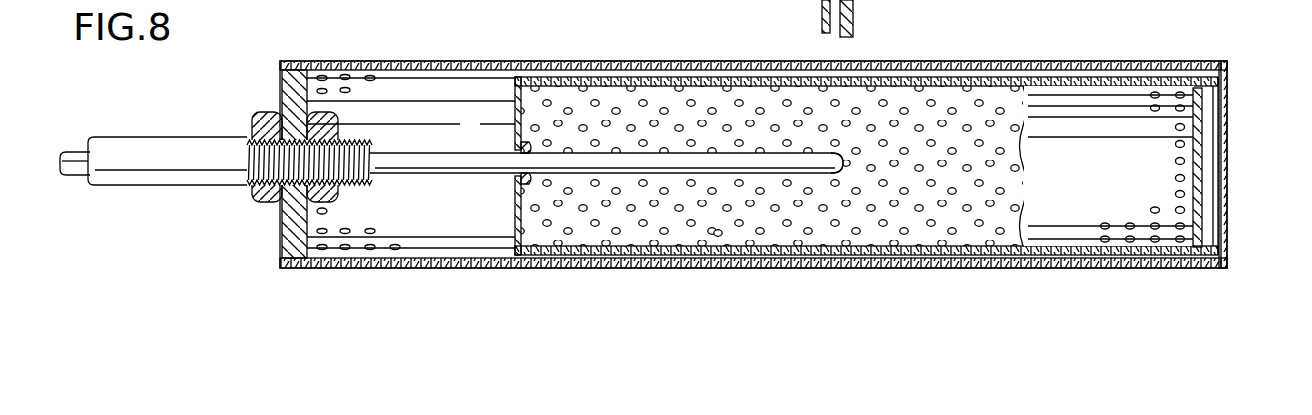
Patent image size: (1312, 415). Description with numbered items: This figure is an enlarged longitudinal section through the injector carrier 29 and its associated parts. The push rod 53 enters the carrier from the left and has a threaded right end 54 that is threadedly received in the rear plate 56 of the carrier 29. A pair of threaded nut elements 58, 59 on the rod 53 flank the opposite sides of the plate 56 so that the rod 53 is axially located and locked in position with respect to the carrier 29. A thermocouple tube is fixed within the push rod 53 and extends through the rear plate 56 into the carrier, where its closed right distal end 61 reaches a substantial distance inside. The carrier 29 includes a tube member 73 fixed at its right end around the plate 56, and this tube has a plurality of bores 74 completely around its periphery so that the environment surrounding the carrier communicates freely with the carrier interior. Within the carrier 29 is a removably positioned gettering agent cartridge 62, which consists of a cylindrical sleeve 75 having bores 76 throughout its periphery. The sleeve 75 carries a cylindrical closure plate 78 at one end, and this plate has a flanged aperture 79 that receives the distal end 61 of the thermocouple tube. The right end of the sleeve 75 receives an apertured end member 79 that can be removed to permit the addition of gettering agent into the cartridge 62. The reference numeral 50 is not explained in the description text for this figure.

The carrier 29 is at (753, 152).
The piston rod 50 is at (440, 152).
The push rod 53 is at (157, 148).
The threaded right end 54 is at (262, 163).
The rear plate 56 is at (294, 90).
The threaded nut element 58 is at (254, 124).
The threaded nut element 59 is at (328, 126).
The closed right distal end 61 is at (843, 160).
The gettering agent cartridge 62 is at (993, 80).
The tube member 73 is at (641, 63).
The bores 74 is at (751, 68).
The cylindrical sleeve 75 is at (852, 258).
The bores 76 is at (717, 237).
The cylindrical closure plate 78 is at (516, 205).
The flanged aperture / apertured end member 79 is at (515, 152).